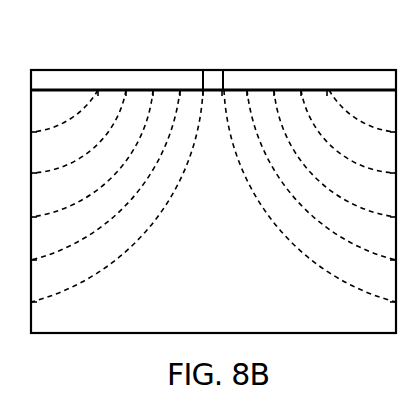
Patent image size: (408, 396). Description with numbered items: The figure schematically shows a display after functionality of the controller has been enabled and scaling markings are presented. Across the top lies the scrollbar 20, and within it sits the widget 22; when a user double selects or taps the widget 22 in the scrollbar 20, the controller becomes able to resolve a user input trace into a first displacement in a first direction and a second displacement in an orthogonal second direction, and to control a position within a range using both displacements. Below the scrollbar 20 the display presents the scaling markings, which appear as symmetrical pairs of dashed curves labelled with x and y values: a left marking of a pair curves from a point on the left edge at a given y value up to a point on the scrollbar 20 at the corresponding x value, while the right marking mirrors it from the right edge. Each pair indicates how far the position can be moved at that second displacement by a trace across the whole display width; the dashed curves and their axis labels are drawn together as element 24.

The scrollbar 20 is at (355, 78).
The widget 22 is at (211, 81).
The depletion contour lines with x/y axis labels (no visible numeral on sheet) 24 is at (201, 198).